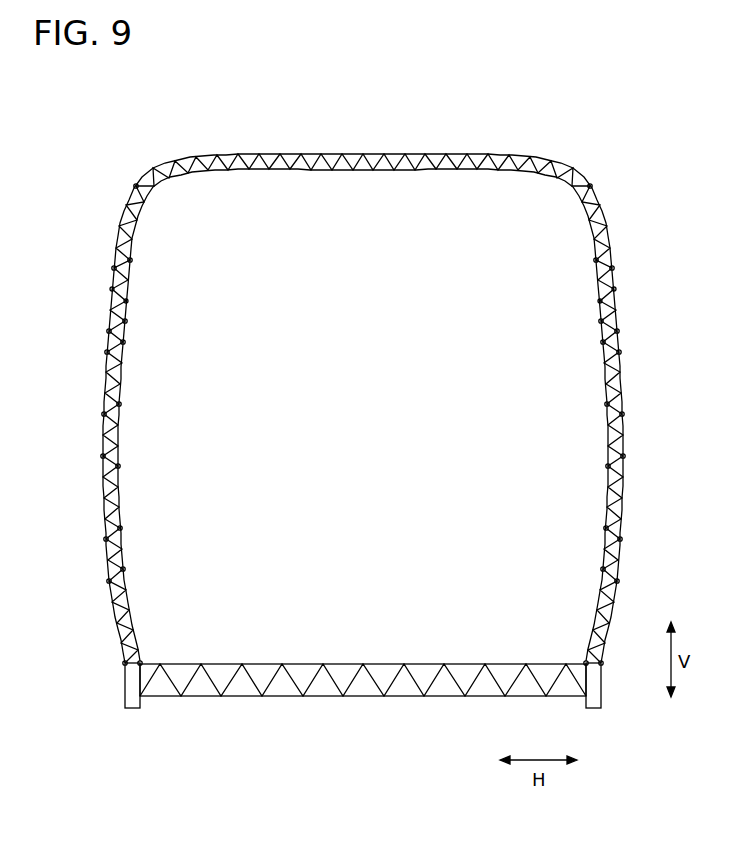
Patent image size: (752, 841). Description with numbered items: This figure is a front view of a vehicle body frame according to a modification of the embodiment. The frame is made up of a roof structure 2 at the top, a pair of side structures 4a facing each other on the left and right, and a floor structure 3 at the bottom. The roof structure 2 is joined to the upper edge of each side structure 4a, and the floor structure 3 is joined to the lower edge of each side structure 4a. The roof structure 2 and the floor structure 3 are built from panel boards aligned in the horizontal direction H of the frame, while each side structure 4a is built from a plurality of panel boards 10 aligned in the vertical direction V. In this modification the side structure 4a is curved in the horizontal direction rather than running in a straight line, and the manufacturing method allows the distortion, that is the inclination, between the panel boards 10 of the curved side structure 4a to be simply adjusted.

The roof structure 2 is at (353, 152).
The floor structure 3 is at (371, 698).
The side structure 4a is at (107, 284).
The panel board 10 is at (107, 345).